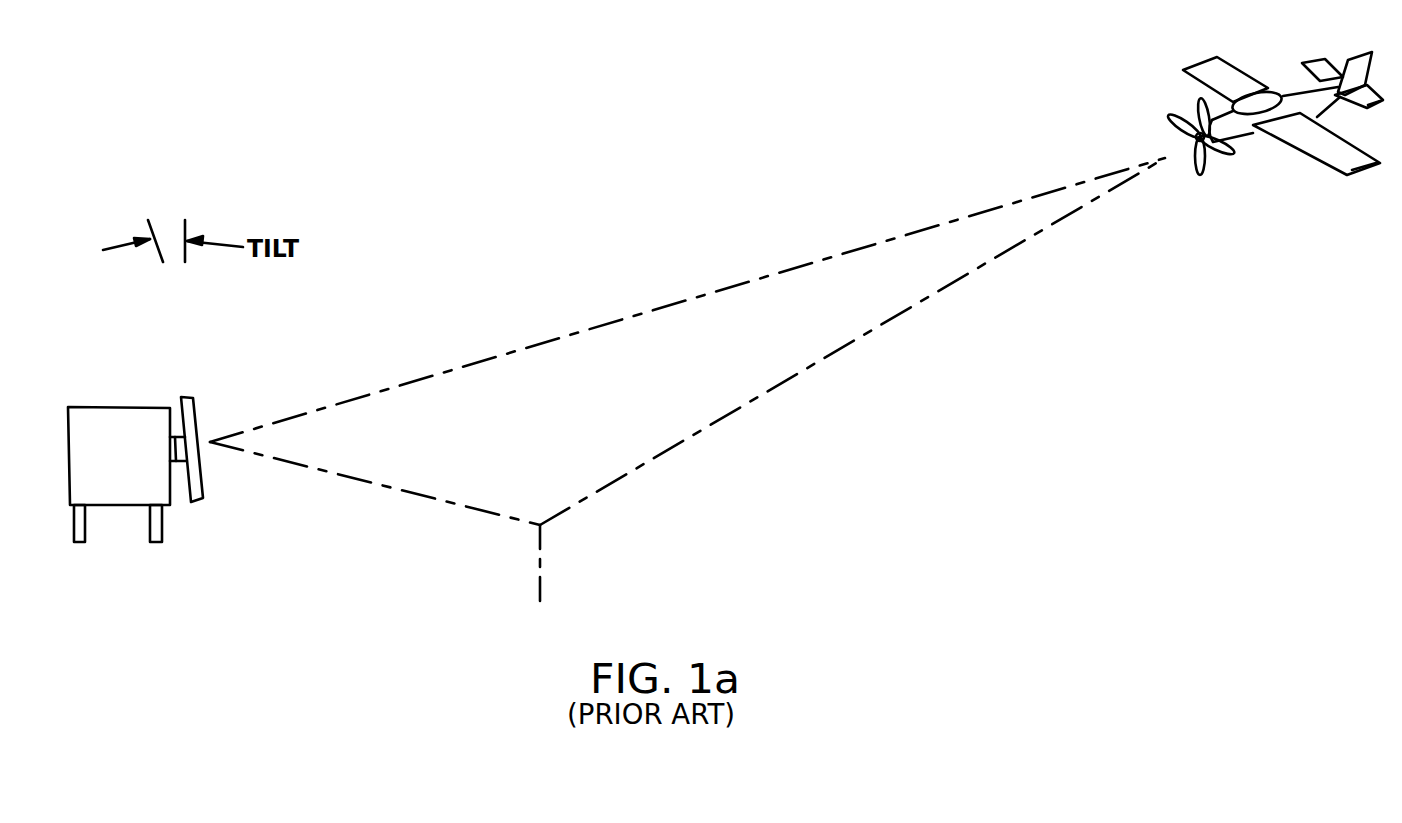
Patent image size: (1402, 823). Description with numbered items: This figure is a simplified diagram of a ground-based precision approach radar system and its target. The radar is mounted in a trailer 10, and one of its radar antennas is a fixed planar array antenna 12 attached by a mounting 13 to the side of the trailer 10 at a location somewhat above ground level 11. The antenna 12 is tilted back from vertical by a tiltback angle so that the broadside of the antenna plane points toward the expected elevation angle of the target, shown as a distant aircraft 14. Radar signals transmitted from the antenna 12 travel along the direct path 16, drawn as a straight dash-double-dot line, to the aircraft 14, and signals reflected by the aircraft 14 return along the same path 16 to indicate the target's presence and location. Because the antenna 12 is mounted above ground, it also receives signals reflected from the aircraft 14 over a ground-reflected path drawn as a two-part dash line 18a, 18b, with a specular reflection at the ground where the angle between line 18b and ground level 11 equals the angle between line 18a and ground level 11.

The trailer 10 is at (108, 407).
The ground level 11 is at (368, 505).
The fixed planar array antenna 12 is at (197, 408).
The mounting 13 is at (178, 462).
The aircraft 14 is at (1320, 146).
The direct path 16 is at (580, 334).
The reflective path first part 18a is at (692, 437).
The reflective path second part 18b is at (415, 493).